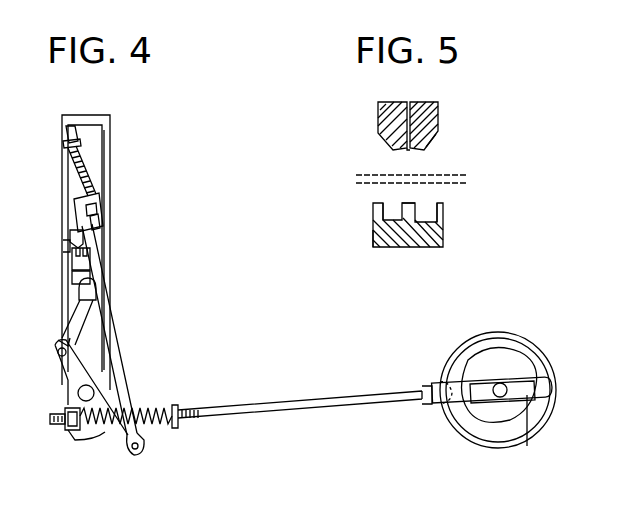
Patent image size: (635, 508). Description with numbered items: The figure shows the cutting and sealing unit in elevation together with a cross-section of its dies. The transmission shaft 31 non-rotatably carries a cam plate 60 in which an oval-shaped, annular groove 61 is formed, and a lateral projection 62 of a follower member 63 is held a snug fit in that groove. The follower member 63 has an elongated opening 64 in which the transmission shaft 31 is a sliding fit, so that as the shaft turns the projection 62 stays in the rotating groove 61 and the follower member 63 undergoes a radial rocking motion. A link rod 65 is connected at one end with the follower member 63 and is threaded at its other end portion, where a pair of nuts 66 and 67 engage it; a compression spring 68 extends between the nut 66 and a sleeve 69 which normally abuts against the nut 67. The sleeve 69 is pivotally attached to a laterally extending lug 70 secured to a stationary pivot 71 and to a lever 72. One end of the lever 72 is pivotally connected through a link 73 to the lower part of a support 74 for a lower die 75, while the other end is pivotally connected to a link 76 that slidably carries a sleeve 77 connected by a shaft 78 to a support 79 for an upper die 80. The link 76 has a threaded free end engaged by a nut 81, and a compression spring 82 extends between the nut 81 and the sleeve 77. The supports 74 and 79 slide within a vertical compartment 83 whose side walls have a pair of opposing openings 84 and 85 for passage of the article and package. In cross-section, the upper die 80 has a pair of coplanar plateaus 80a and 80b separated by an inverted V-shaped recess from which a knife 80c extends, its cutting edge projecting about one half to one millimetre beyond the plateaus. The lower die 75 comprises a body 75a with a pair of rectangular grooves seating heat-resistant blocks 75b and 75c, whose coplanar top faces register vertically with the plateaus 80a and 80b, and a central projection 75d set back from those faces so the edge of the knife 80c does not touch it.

In FIG. 4, the transmission shaft 31 is at (492, 400).
In FIG. 4, the cam plate 60 is at (510, 339).
In FIG. 4, the annular groove 61 is at (545, 361).
In FIG. 4, the lateral projection 62 is at (440, 412).
In FIG. 4, the follower member 63 is at (548, 392).
In FIG. 4, the elongated opening 64 is at (527, 446).
In FIG. 4, the link rod 65 is at (228, 407).
In FIG. 4, the nut 66 is at (178, 424).
In FIG. 4, the nut 67 is at (56, 426).
In FIG. 4, the compression spring 68 is at (152, 425).
In FIG. 4, the sleeve 69 is at (76, 430).
In FIG. 4, the laterally extending lug 70 is at (66, 412).
In FIG. 4, the stationary pivot 71 is at (94, 392).
In FIG. 4, the lever 72 is at (70, 383).
In FIG. 4, the link 73 is at (68, 330).
In FIG. 4, the support 74 is at (72, 276).
In FIG. 4, the lower die 75 is at (72, 258).
In FIG. 5, the lower die 75 is at (453, 236).
In FIG. 5, the body 75a is at (374, 237).
In FIG. 5, the heat-resistant block 75b is at (384, 213).
In FIG. 5, the heat-resistant block 75c is at (428, 203).
In FIG. 5, the central projection 75d is at (405, 204).
In FIG. 4, the link 76 is at (118, 351).
In FIG. 4, the sleeve 77 is at (100, 222).
In FIG. 4, the shaft 78 is at (92, 200).
In FIG. 4, the support 79 is at (97, 210).
In FIG. 4, the upper die 80 is at (70, 236).
In FIG. 5, the upper die 80 is at (409, 114).
In FIG. 5, the plateau 80a is at (383, 151).
In FIG. 5, the plateau 80b is at (426, 153).
In FIG. 5, the knife 80c is at (410, 153).
In FIG. 4, the nut 81 is at (64, 143).
In FIG. 4, the compression spring 82 is at (70, 168).
In FIG. 4, the vertical compartment 83 is at (110, 136).
In FIG. 4, the opening 84 is at (62, 247).
In FIG. 4, the opening 85 is at (110, 250).